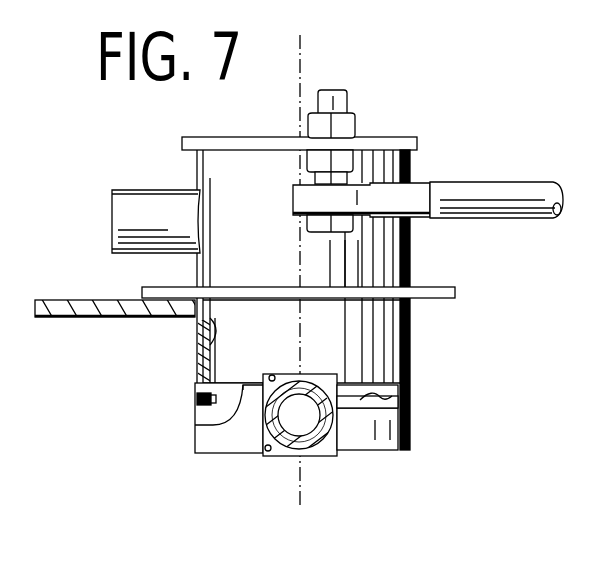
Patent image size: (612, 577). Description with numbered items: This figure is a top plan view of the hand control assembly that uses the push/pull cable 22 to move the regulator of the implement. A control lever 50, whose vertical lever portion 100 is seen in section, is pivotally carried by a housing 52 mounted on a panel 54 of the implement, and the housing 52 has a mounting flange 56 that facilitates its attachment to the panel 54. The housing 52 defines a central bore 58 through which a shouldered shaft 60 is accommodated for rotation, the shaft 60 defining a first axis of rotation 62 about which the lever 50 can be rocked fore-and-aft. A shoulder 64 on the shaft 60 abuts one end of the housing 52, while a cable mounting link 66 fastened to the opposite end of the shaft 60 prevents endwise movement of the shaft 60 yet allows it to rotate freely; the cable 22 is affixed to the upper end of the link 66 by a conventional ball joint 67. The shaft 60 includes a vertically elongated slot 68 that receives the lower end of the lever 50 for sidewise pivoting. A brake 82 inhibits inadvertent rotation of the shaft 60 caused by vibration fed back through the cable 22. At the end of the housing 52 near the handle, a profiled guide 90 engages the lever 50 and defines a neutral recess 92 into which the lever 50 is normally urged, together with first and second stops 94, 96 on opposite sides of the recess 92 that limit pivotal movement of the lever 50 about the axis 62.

The push/pull cable 22 is at (533, 181).
The control lever 50 is at (280, 461).
The housing 52 is at (412, 359).
The panel 54 is at (70, 308).
The mounting flange 56 is at (436, 292).
The central bore 58 is at (200, 326).
The shouldered shaft 60 is at (360, 435).
The first axis of rotation 62 is at (298, 487).
The shoulder 64 is at (400, 412).
The cable mounting link 66 is at (398, 147).
The ball joint 67 is at (411, 194).
The vertically elongated slot 68 is at (262, 449).
The brake 82 is at (136, 146).
The profiled guide 90 is at (195, 425).
The neutral recess 92 is at (272, 375).
The first stop 94 is at (197, 400).
The second stop 96 is at (382, 397).
The vertical lever portion 100 is at (340, 456).